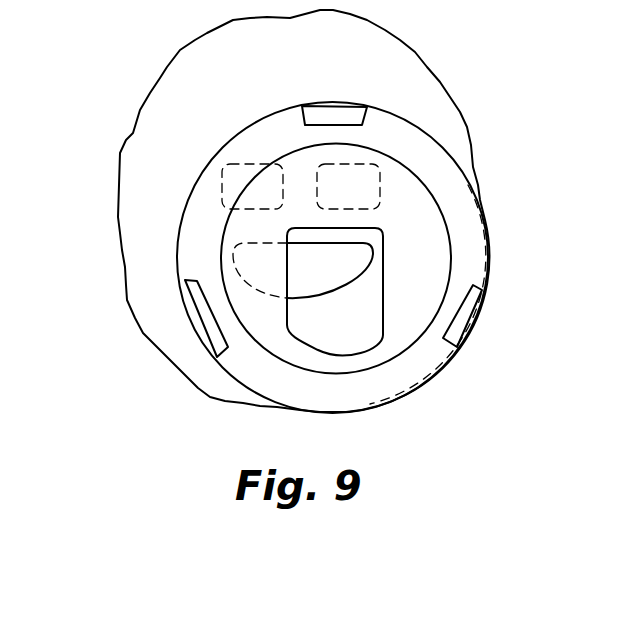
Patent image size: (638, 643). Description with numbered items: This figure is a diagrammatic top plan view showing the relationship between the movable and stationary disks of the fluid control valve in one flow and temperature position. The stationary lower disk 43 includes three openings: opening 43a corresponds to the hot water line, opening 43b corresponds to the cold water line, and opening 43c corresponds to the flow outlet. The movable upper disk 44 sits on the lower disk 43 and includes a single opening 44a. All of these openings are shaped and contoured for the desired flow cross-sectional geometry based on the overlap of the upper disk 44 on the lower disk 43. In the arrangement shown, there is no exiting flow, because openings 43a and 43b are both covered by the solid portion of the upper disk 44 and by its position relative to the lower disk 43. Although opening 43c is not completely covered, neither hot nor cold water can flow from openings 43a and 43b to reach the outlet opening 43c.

The lower disk 43 is at (410, 84).
The opening 43a is at (270, 187).
The opening 43b is at (350, 183).
The opening 43c is at (275, 272).
The upper disk 44 is at (483, 312).
The opening 44a is at (363, 318).